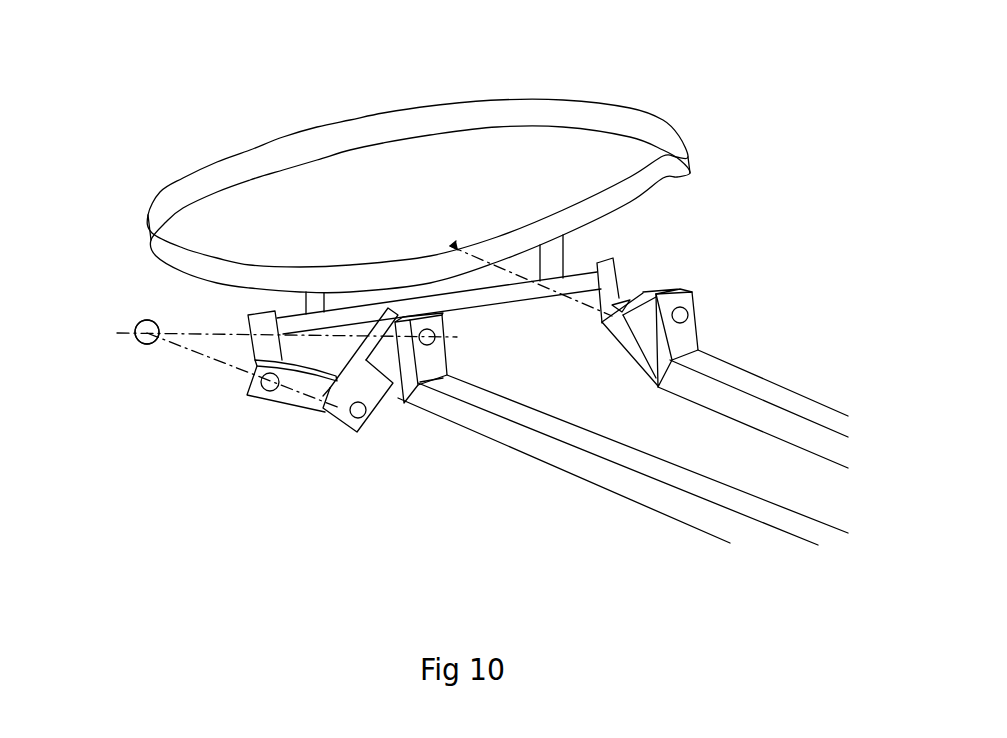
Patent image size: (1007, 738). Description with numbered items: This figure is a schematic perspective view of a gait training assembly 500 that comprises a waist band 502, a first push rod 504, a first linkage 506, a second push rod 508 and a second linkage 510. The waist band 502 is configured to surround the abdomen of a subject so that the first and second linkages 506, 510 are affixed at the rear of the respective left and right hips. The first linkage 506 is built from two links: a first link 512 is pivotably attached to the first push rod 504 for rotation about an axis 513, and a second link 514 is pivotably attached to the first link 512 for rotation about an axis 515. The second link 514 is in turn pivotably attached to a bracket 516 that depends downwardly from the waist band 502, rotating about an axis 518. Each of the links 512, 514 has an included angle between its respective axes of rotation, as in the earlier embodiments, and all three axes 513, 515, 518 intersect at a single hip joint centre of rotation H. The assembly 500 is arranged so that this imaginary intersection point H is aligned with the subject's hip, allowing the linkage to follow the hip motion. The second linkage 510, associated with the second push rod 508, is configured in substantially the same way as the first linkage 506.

The gait training assembly 500 is at (262, 117).
The waist band 502 is at (557, 120).
The first push rod 504 is at (547, 455).
The first linkage 506 is at (325, 463).
The second push rod 508 is at (775, 418).
The second linkage 510 is at (737, 282).
The first link 512 is at (386, 386).
The axis 513 is at (227, 330).
The second link 514 is at (277, 405).
The axis 515 is at (328, 413).
The bracket 516 is at (468, 302).
The axis 518 is at (193, 350).
The hip joint centre of rotation H is at (270, 356).